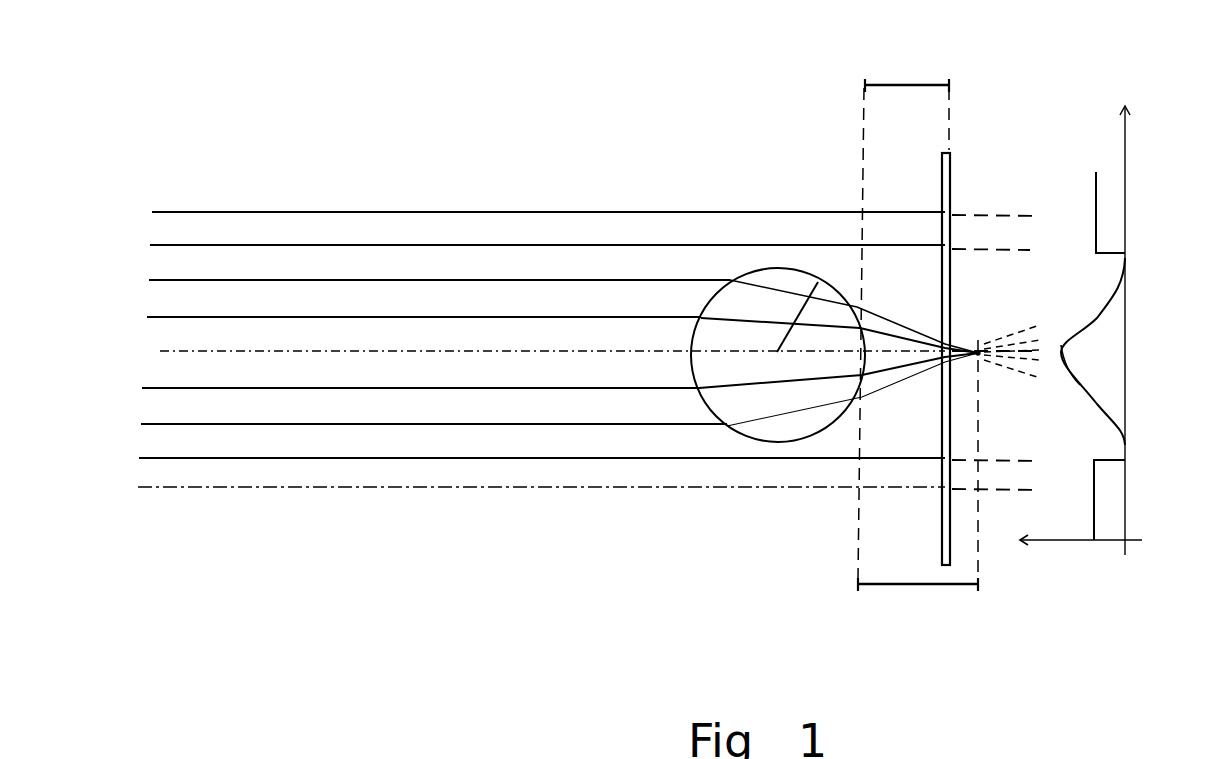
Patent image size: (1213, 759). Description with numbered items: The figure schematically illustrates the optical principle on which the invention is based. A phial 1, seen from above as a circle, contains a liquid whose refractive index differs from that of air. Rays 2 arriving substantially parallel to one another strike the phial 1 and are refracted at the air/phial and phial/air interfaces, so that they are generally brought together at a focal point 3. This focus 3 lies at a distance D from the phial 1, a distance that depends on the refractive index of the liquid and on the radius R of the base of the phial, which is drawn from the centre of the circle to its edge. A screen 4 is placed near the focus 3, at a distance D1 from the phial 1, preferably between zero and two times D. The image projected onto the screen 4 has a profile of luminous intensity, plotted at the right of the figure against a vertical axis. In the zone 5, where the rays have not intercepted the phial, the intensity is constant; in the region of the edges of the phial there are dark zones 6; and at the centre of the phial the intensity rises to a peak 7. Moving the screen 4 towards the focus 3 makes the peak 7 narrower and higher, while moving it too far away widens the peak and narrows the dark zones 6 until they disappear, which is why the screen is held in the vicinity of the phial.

The phial 1 is at (778, 432).
The rays 2 is at (338, 388).
The focal point 3 is at (981, 352).
The screen 4 is at (950, 553).
The zone of constant intensity 5 is at (1127, 205).
The dark zones 6 is at (1125, 262).
The peak 7 is at (1064, 352).
The distance from phial to focus D is at (892, 588).
The distance from phial to screen D1 is at (905, 86).
The radius of the base of the phial R is at (798, 311).